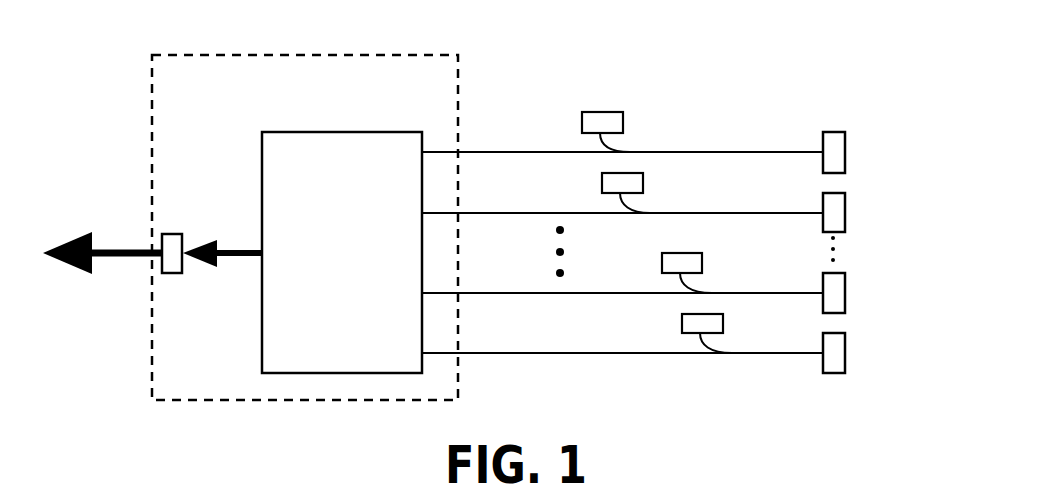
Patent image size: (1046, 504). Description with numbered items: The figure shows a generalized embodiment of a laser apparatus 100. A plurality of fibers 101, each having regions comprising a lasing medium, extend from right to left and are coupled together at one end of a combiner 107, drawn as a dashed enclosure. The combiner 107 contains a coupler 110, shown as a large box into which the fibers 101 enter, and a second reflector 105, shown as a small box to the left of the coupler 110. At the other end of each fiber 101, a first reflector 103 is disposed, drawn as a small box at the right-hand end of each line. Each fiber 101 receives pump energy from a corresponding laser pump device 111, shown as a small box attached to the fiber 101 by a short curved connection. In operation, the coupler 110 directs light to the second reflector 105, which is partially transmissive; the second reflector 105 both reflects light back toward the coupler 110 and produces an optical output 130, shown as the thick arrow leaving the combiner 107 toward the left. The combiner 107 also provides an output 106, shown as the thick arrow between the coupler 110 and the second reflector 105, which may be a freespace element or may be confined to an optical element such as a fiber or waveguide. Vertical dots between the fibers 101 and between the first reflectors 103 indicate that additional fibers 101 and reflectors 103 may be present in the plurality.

The laser apparatus 100 is at (452, 34).
The combiner 107 is at (150, 127).
The coupler 110 is at (362, 132).
The second reflector 105 is at (168, 234).
The optical output 130 is at (95, 258).
The output 106 is at (222, 259).
The fibers 101 is at (732, 151).
The laser pump device 111 is at (582, 123).
The first reflector 103 is at (845, 141).